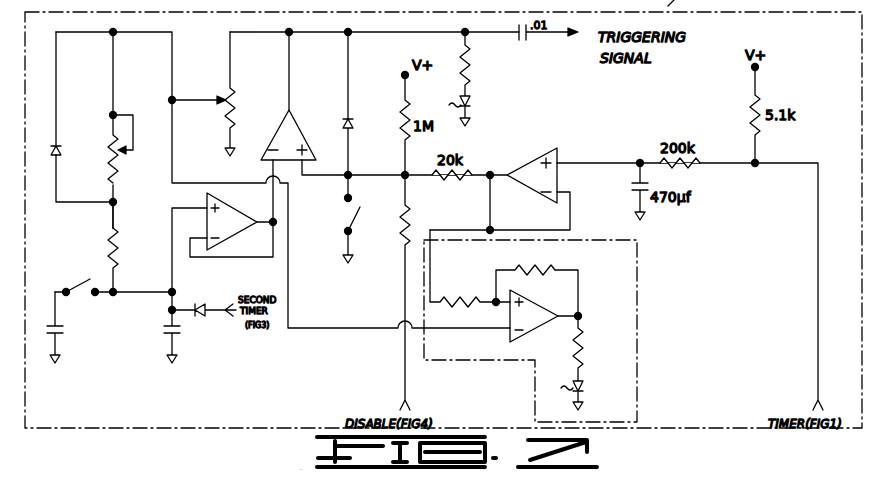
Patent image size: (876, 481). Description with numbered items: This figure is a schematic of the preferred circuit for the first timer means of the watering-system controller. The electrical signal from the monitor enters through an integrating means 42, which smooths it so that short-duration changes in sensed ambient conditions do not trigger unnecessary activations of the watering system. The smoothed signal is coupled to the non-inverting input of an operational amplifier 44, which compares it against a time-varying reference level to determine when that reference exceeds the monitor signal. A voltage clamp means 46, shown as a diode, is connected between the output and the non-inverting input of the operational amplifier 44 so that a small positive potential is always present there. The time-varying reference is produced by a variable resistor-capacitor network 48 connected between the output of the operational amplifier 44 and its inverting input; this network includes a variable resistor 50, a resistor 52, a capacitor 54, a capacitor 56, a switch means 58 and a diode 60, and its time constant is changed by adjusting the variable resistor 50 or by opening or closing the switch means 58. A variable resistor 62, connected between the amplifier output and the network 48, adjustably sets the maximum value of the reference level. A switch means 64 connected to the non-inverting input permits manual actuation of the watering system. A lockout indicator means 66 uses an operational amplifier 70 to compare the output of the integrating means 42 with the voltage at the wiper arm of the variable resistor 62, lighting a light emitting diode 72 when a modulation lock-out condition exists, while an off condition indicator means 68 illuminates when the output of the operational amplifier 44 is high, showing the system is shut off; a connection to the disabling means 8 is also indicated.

The disabling means 8 is at (673, 480).
The integrating means 42 is at (571, 148).
The operational amplifier 44 is at (291, 112).
The voltage clamp means 46 is at (351, 118).
The variable resistor-capacitor network 48 is at (97, 229).
The variable resistor 50 is at (112, 140).
The resistor 52 is at (107, 253).
The capacitor 54 is at (167, 345).
The capacitor 56 is at (61, 345).
The switch means 58 is at (88, 280).
The diode 60 is at (58, 156).
The variable resistor 62 is at (226, 114).
The switch means 64 is at (356, 222).
The lockout indicator means 66 is at (640, 296).
The off condition indicator means 68 is at (473, 105).
The operational amplifier 70 is at (556, 322).
The light emitting diode 72 is at (585, 388).